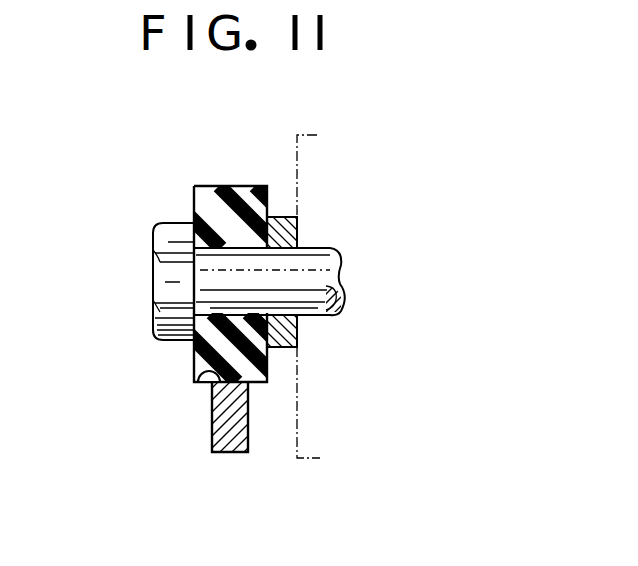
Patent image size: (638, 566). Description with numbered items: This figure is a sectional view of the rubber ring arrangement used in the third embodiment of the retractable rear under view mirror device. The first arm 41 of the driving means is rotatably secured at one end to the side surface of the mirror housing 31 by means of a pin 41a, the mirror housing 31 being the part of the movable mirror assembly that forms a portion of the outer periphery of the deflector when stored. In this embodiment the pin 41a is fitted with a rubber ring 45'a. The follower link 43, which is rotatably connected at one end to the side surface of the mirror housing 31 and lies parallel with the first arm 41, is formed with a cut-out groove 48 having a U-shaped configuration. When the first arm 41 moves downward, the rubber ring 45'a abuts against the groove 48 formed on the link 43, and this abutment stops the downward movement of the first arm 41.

The mirror housing 31 is at (298, 427).
The first arm 41 is at (277, 235).
The pin 41a is at (168, 280).
The follower link 43 is at (213, 428).
The rubber ring 45'a is at (238, 238).
The cut-out groove 48 is at (196, 368).